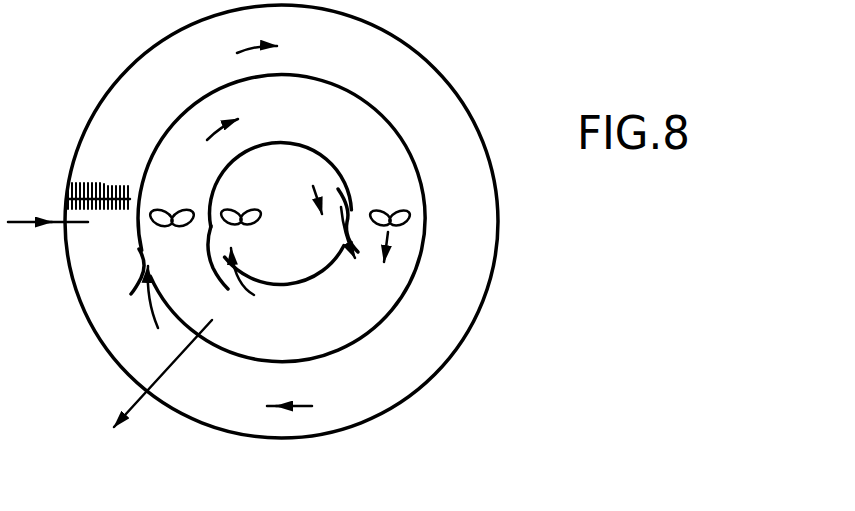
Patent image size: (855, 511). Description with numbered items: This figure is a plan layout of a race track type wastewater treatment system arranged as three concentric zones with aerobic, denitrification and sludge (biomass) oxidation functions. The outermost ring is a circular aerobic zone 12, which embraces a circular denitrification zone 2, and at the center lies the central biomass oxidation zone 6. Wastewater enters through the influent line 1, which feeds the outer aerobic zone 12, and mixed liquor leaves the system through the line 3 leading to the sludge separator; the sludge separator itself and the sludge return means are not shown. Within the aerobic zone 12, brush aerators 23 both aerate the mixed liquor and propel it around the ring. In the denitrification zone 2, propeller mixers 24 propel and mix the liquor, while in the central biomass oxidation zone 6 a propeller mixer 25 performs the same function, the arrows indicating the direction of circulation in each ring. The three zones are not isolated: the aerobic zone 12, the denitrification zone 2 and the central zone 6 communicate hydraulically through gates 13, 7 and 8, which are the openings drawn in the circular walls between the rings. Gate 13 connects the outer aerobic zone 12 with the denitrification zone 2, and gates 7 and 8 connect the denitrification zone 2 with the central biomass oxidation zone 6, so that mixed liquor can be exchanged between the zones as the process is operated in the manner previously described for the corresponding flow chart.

The influent line 1 is at (32, 227).
The circular denitrification zone 2 is at (298, 125).
The line leading to the sludge separator 3 is at (141, 399).
The central biomass oxidation zone 6 is at (272, 192).
The gate 7 is at (236, 271).
The gate 8 is at (357, 211).
The circular aerobic zone 12 is at (181, 79).
The gate 13 is at (137, 298).
The brush aerators 23 is at (96, 183).
The propeller mixers 24 is at (174, 207).
The propeller mixer 25 is at (240, 223).